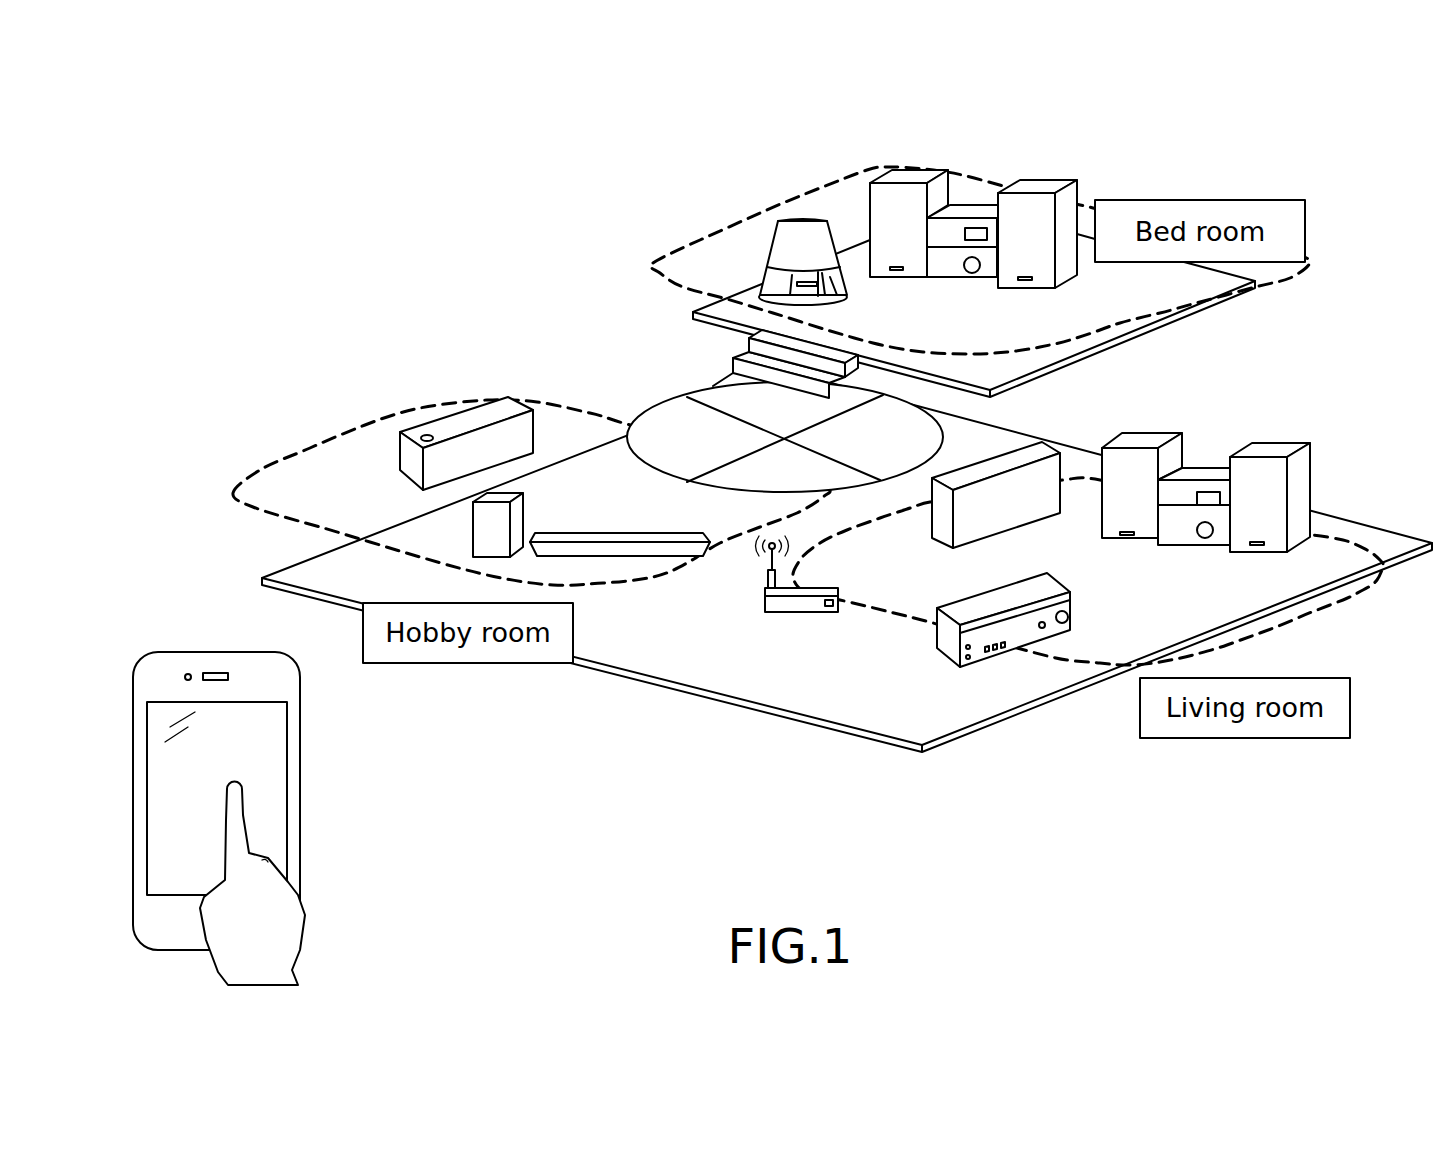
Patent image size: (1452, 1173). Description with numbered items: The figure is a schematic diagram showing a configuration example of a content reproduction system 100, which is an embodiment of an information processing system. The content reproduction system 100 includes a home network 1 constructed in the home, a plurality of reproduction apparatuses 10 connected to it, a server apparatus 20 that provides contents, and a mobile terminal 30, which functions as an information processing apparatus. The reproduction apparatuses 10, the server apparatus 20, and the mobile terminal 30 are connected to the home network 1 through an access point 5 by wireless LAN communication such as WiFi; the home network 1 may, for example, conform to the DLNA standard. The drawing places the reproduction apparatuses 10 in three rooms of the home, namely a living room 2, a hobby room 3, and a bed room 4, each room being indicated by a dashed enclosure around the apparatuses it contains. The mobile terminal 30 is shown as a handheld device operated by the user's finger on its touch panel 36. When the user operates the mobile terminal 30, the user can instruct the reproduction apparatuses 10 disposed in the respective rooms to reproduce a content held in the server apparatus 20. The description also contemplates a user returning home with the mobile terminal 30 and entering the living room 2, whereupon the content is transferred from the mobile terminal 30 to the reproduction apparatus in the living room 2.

The content reproduction system 100 is at (720, 150).
The home network 1 is at (667, 400).
The living room 2 is at (1327, 607).
The hobby room 3 is at (315, 448).
The bed room 4 is at (853, 172).
The access point 5 is at (763, 598).
The reproduction apparatus 10 is at (770, 250).
The server apparatus 20 is at (1023, 442).
The mobile terminal 30 is at (203, 650).
The touch panel 36 is at (273, 787).